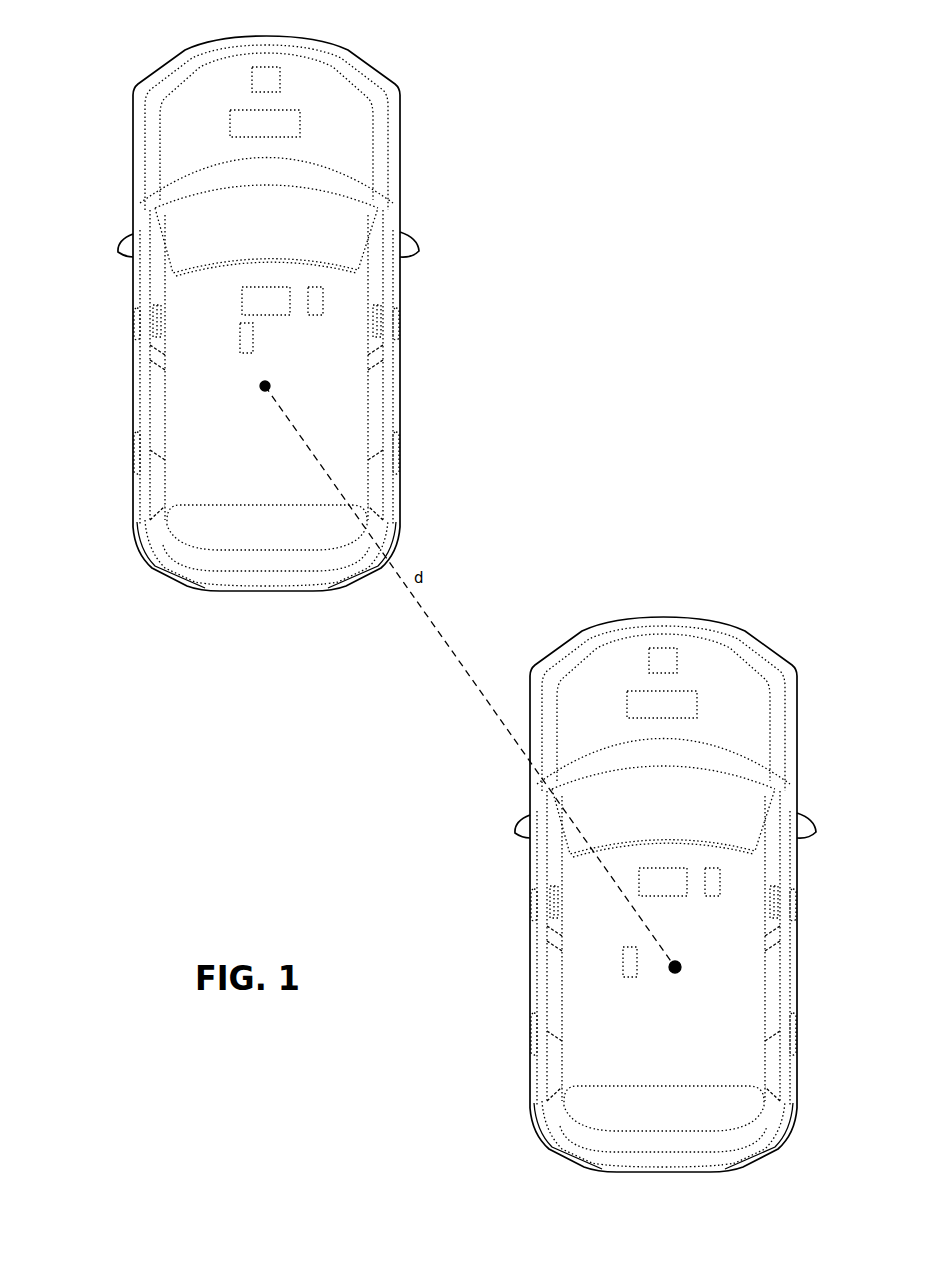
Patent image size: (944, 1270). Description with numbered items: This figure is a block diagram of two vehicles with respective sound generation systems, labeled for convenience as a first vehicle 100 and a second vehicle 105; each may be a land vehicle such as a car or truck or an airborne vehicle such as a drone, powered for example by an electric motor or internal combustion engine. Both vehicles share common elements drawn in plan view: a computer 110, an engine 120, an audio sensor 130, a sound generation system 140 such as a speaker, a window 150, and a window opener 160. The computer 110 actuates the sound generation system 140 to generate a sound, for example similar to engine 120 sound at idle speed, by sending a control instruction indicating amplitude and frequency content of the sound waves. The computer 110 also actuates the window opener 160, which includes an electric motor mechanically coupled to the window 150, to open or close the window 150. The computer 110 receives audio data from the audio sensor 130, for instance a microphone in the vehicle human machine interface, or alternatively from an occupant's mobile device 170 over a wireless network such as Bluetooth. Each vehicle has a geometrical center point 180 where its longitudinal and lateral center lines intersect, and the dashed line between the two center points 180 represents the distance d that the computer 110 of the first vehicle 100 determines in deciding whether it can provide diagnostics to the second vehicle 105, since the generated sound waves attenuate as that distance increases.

The first vehicle 100 is at (432, 59).
The second vehicle 105 is at (687, 546).
The computer 110 is at (250, 283).
The engine 120 is at (232, 125).
The audio sensor 130 is at (333, 288).
The sound generation system 140 is at (250, 72).
The window 150 is at (160, 289).
The window opener 160 is at (152, 325).
The mobile device 170 is at (238, 350).
The geometrical center point 180 is at (265, 386).